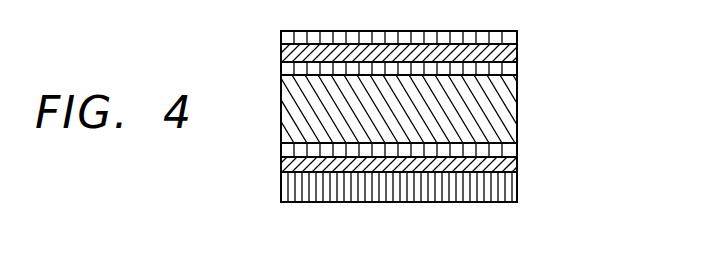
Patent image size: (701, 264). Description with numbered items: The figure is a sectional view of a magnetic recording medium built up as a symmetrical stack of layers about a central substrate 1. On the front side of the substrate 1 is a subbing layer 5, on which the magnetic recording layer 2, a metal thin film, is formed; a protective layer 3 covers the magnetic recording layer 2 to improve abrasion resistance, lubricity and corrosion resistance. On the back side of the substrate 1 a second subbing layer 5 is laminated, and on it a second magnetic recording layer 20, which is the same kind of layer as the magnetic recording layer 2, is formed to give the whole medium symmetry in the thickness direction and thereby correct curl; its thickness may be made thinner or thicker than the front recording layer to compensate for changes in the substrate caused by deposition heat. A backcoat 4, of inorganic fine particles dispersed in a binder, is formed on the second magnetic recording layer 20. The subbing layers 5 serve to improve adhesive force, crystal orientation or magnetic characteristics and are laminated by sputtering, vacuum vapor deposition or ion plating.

The substrate 1 is at (517, 123).
The magnetic recording layer 2 is at (517, 52).
The protective layer 3 is at (517, 38).
The backcoat 4 is at (517, 188).
The subbing layer 5 is at (517, 70).
The second magnetic recording layer 20 is at (517, 167).